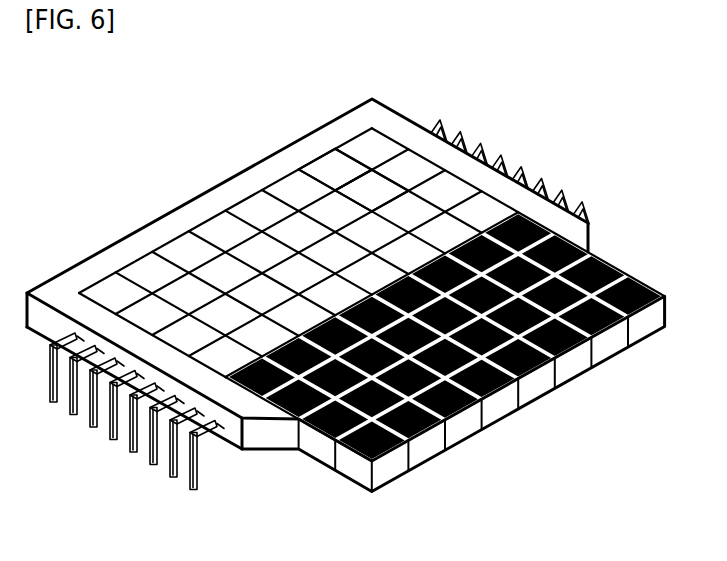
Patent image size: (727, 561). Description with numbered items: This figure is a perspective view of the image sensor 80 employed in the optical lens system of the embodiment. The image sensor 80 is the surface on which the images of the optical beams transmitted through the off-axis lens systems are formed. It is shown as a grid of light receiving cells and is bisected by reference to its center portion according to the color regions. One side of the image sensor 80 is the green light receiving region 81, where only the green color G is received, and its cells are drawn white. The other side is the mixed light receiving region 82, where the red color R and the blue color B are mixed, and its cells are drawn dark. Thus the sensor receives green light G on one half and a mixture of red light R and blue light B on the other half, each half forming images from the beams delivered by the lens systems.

The image sensor 80 is at (155, 146).
The green light receiving region 81 is at (333, 167).
The mixed light receiving region 82 is at (588, 248).
The green color G is at (365, 185).
The red color R is at (535, 370).
The blue color B is at (565, 345).